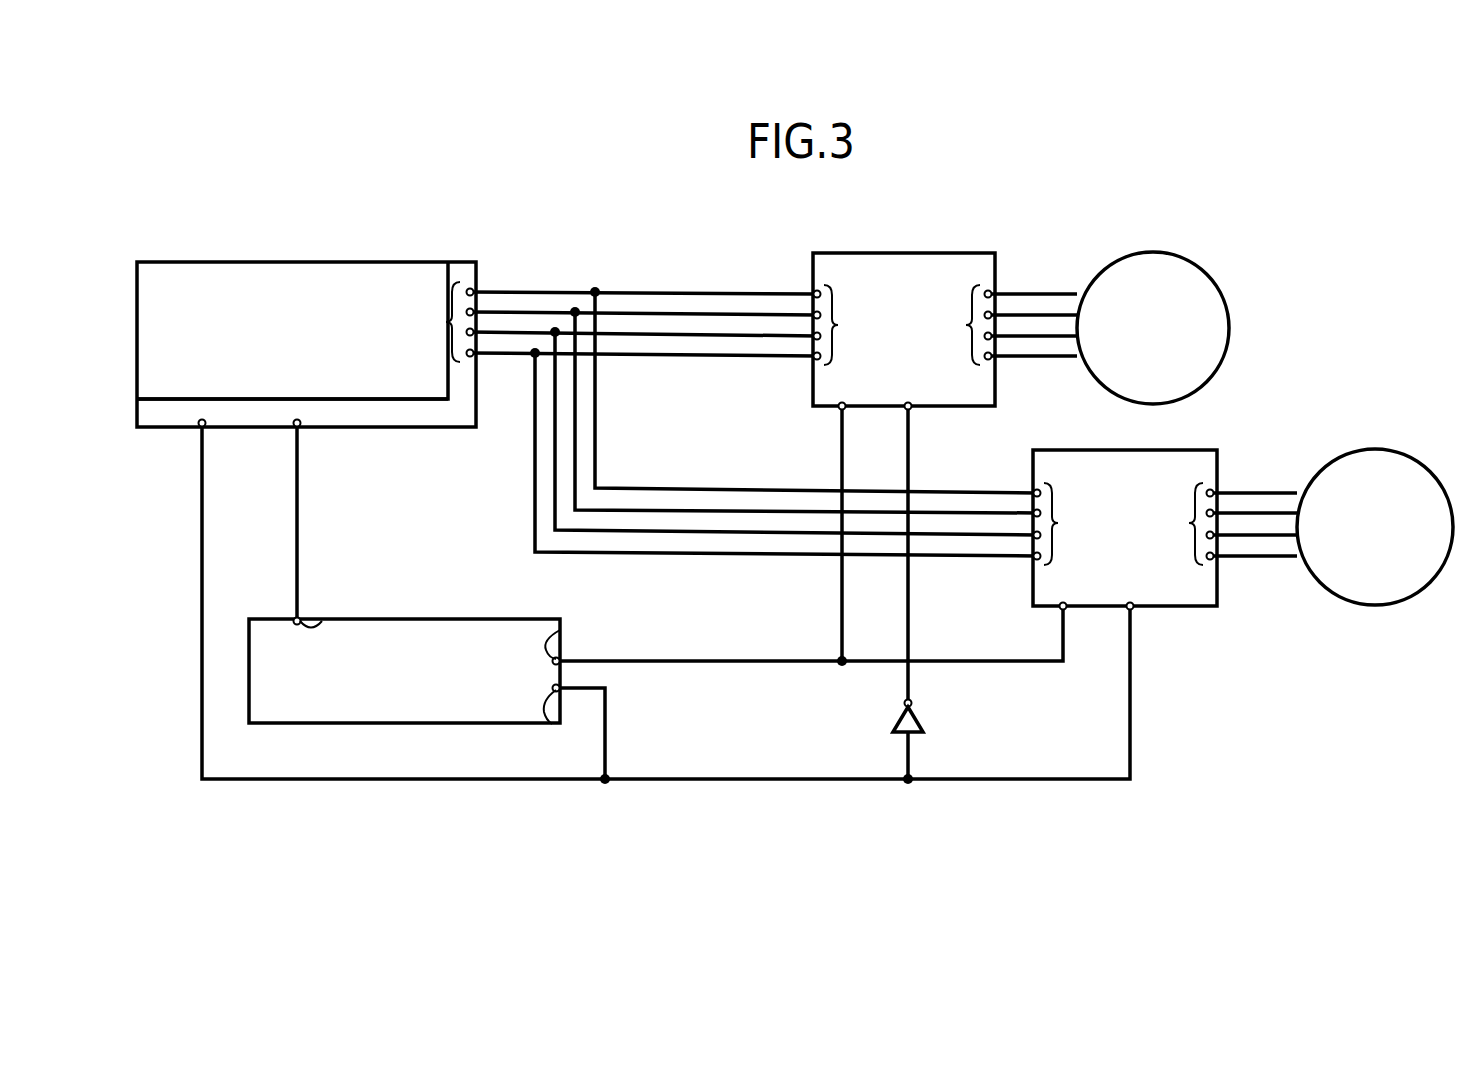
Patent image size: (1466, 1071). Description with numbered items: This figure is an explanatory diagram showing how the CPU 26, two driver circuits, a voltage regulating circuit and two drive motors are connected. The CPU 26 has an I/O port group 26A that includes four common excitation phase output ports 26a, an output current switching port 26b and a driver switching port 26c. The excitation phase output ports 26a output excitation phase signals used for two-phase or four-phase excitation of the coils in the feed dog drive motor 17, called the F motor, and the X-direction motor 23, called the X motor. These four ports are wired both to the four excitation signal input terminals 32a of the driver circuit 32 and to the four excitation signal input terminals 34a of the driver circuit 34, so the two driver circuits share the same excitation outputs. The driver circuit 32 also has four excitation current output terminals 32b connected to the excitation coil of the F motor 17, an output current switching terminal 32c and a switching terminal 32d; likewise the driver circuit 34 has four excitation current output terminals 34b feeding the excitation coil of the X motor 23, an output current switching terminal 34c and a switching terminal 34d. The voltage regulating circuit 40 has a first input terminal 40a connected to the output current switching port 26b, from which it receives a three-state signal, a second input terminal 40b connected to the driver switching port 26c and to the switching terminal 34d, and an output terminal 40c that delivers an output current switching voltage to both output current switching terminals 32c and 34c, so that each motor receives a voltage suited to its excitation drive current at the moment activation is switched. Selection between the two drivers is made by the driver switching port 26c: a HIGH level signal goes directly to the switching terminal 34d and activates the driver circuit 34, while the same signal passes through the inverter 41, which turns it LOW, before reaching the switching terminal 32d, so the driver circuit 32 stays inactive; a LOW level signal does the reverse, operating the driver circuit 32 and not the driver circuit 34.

The CPU 26 is at (294, 262).
The I/O port group 26A is at (176, 398).
The excitation phase output ports 26a is at (438, 322).
The output current switching port 26b is at (299, 419).
The driver switching port 26c is at (204, 419).
The driver circuit 32 is at (900, 253).
The excitation signal input terminals 32a is at (851, 325).
The excitation current output terminals 32b is at (954, 325).
The output current switching terminal 32c is at (843, 402).
The switching terminal 32d is at (909, 402).
The feed dog drive motor 17 is at (1152, 252).
The driver circuit 34 is at (1181, 607).
The excitation signal input terminals 34a is at (1072, 524).
The excitation current output terminals 34b is at (1177, 524).
The output current switching terminal 34c is at (1064, 602).
The switching terminal 34d is at (1131, 602).
The X-direction motor 23 is at (1373, 449).
The voltage regulating circuit 40 is at (433, 619).
The first input terminal 40a is at (322, 621).
The second input terminal 40b is at (552, 724).
The output terminal 40c is at (560, 630).
The inverter 41 is at (924, 718).